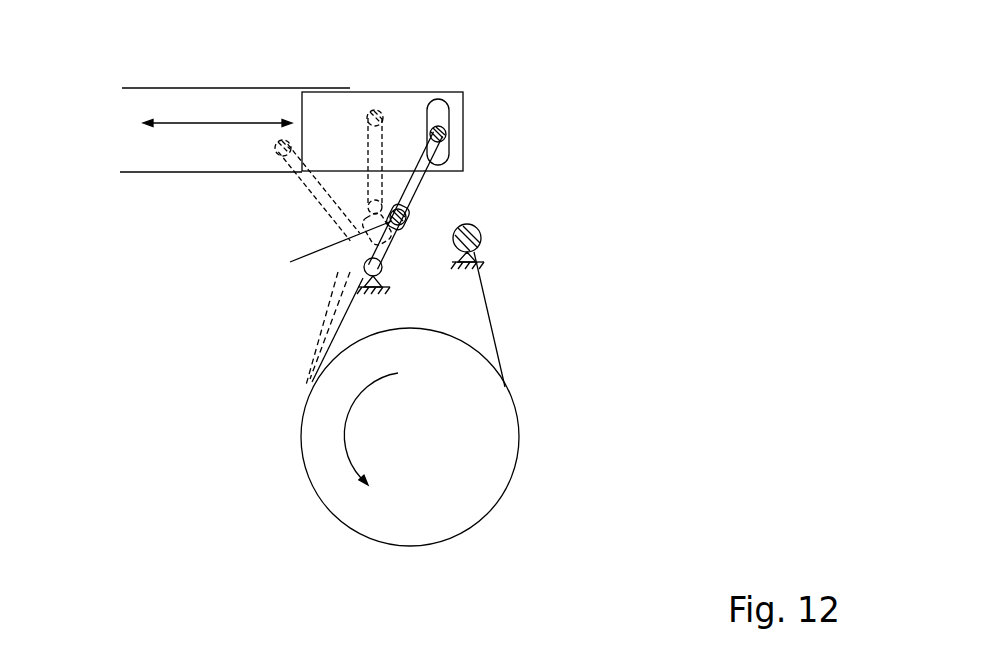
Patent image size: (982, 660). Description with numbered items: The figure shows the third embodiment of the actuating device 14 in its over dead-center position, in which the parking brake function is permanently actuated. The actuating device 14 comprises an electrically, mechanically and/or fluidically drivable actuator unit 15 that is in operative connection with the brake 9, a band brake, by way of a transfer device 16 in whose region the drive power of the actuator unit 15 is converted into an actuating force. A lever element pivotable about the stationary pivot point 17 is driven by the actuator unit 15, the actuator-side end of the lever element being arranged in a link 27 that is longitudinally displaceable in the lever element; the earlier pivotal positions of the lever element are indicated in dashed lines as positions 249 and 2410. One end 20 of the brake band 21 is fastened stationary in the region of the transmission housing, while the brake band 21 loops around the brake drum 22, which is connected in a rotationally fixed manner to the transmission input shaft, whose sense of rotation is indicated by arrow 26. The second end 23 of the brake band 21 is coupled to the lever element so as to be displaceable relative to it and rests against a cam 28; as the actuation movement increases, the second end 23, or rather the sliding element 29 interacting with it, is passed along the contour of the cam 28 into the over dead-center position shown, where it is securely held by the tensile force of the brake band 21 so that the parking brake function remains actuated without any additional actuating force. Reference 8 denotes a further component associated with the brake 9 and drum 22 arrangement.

The actuator unit 15 is at (213, 78).
The actuating device 14 is at (482, 120).
The sliding element 29 is at (420, 200).
The link 27 is at (398, 200).
The stationary pivot point 17 is at (383, 277).
The cam 28 is at (427, 218).
The second end 23 is at (365, 256).
The one end 20 is at (482, 246).
The brake band 21 is at (500, 355).
The brake drum 22 is at (519, 448).
The direction of rotation 26 is at (347, 435).
The transfer device 16 is at (264, 335).
The pivotal position of the lever element 249 is at (310, 202).
The pivotal position of the lever element 2410 is at (372, 198).
The drum device 8 is at (303, 531).
The brake 9 is at (474, 547).